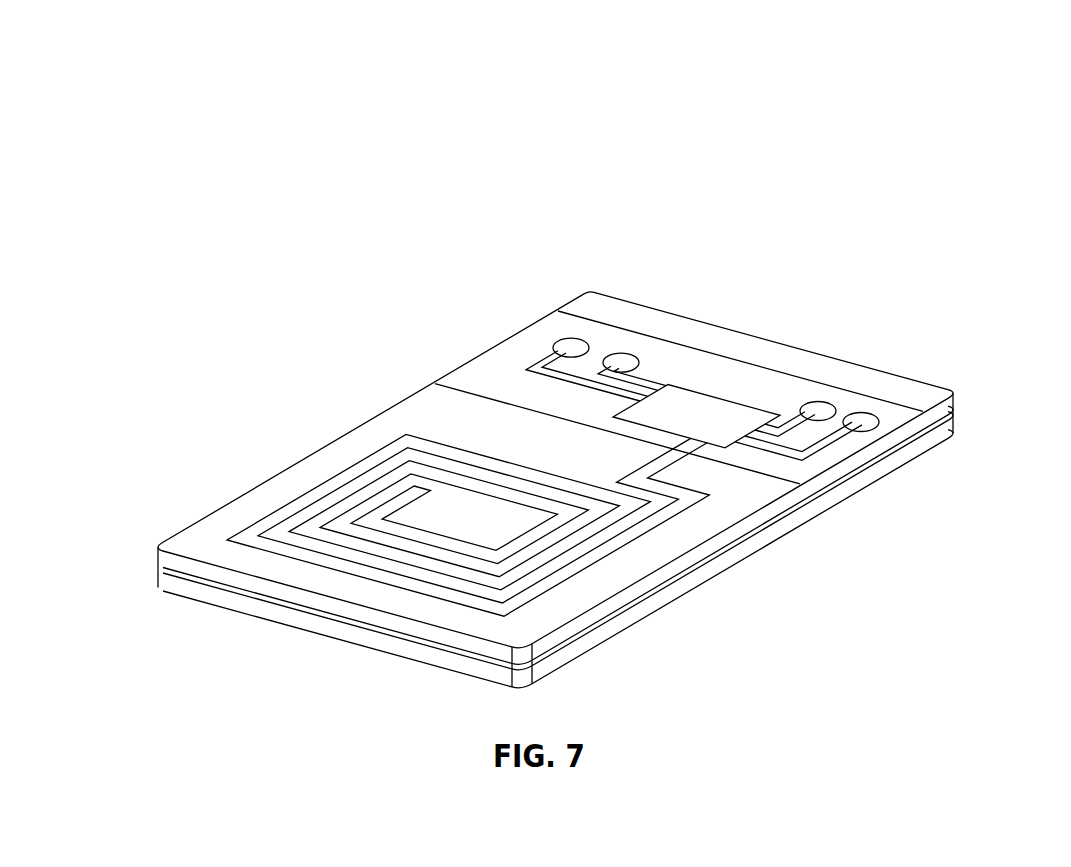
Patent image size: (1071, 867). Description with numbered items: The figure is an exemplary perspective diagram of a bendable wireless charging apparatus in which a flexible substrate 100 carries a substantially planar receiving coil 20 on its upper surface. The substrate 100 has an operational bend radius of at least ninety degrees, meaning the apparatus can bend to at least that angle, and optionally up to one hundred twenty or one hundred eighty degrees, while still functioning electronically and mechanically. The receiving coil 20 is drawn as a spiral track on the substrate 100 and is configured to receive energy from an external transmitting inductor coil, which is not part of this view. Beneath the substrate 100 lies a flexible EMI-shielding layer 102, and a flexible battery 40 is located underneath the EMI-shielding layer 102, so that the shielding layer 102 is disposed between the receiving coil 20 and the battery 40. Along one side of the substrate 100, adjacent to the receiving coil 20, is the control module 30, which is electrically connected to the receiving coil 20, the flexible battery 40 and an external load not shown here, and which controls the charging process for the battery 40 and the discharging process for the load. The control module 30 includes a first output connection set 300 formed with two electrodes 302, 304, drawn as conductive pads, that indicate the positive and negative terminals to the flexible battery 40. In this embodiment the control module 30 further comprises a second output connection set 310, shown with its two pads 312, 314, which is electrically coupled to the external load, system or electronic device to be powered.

The receiving coil 20 is at (438, 408).
The control module 30 is at (519, 336).
The flexible battery 40 is at (313, 627).
The flexible substrate 100 is at (205, 537).
The EMI-shielding layer 102 is at (170, 572).
The first output connection set 300 is at (828, 243).
The electrode 302 is at (620, 358).
The electrode 304 is at (818, 408).
The second output connection set 310 is at (713, 88).
The electrode of second output connection set 312 is at (572, 342).
The electrode of second output connection set 314 is at (866, 418).